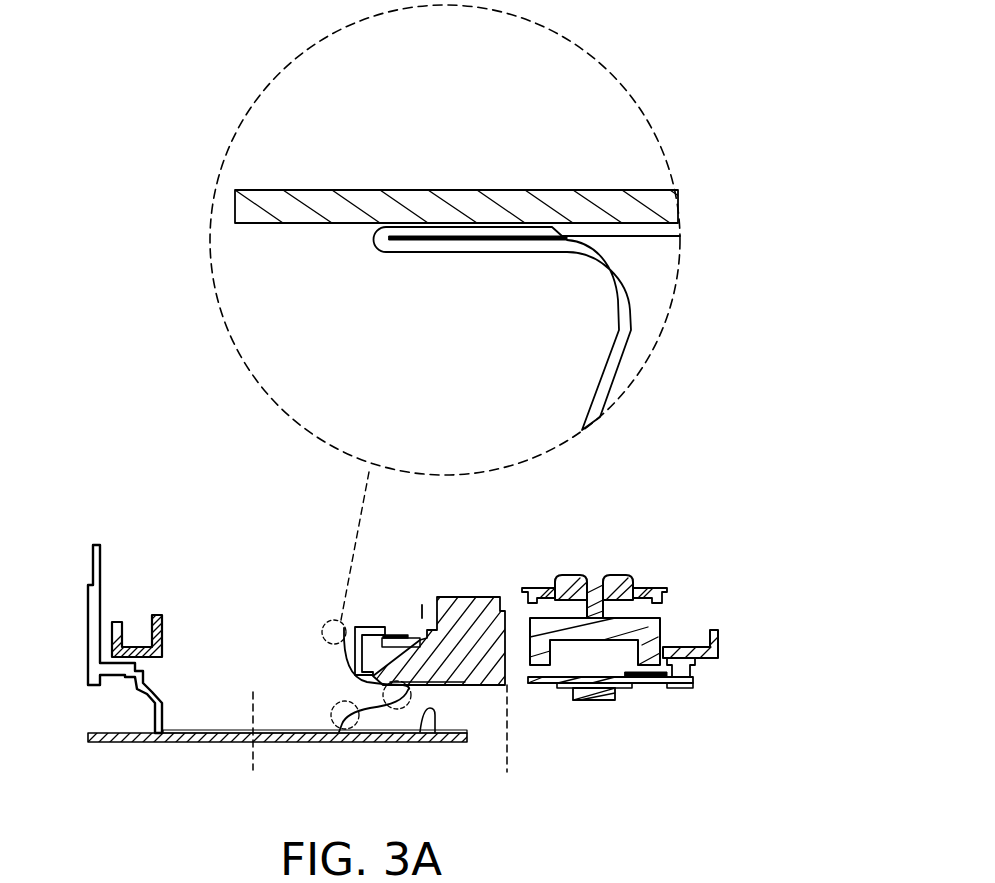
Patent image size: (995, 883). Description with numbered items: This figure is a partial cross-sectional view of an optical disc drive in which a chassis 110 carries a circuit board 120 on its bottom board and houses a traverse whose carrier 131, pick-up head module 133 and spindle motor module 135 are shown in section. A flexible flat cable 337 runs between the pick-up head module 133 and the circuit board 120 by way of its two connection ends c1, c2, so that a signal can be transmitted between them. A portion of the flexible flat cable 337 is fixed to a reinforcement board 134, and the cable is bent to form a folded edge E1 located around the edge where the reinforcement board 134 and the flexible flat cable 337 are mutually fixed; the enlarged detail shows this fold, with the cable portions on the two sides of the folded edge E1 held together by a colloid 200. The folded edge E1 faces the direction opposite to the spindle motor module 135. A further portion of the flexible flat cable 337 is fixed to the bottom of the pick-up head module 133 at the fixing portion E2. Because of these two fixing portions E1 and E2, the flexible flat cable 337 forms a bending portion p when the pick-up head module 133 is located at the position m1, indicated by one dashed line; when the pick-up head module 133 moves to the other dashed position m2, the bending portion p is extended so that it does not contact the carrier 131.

The chassis 110 is at (97, 543).
The circuit board 120 is at (186, 744).
The carrier 131 is at (122, 620).
The pick-up head module 133 is at (485, 594).
The reinforcement board 134 is at (250, 197).
The spindle motor module 135 is at (650, 546).
The colloid 200 is at (485, 242).
The flexible flat cable 337 is at (624, 327).
The folded edge E1 is at (352, 243).
The fixing portion E2 is at (423, 693).
The connection end c1 is at (370, 627).
The connection end c2 is at (435, 733).
The position m1 is at (513, 743).
The position m2 is at (256, 746).
The bending portion p is at (312, 742).